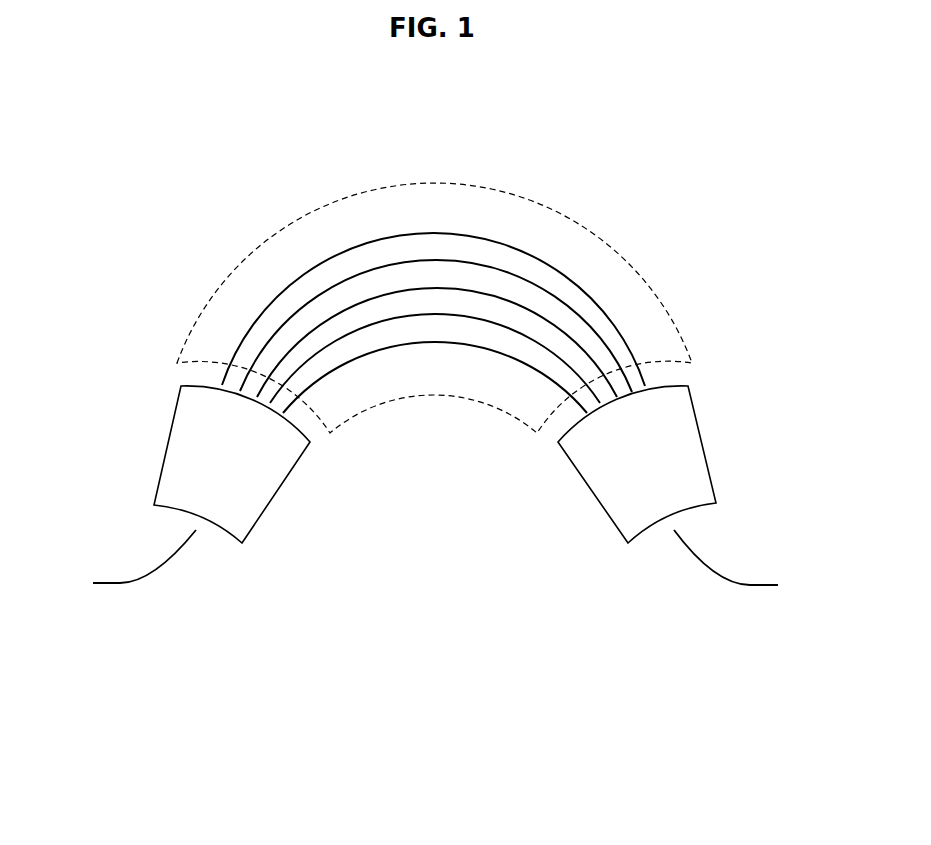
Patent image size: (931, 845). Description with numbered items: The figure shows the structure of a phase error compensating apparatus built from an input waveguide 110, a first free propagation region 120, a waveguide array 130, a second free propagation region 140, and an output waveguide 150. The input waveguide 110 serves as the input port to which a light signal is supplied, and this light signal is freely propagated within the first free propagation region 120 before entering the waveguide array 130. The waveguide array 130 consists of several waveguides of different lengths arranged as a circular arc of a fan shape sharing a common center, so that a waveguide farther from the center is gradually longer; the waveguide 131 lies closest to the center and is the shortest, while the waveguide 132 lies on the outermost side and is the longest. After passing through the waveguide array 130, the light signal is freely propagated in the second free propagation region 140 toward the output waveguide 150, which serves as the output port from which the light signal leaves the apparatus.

The input waveguide 110 is at (118, 584).
The first free propagation region 120 is at (278, 493).
The waveguide array 130 is at (435, 182).
The waveguide 131 is at (435, 343).
The waveguide 132 is at (530, 248).
The second free propagation region 140 is at (593, 493).
The output waveguide 150 is at (750, 586).